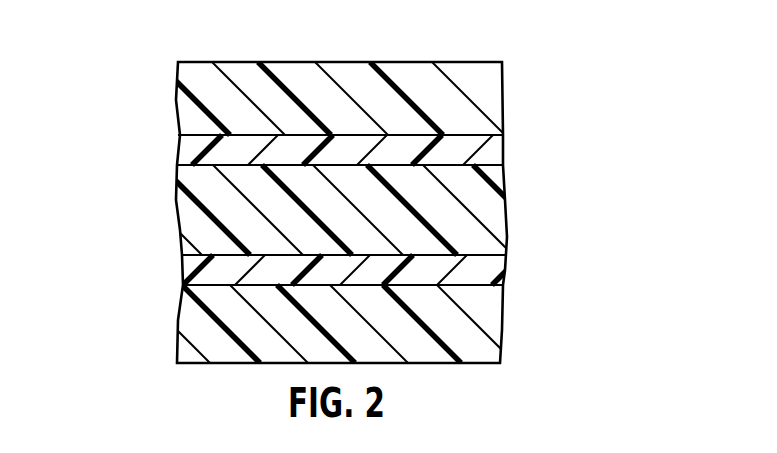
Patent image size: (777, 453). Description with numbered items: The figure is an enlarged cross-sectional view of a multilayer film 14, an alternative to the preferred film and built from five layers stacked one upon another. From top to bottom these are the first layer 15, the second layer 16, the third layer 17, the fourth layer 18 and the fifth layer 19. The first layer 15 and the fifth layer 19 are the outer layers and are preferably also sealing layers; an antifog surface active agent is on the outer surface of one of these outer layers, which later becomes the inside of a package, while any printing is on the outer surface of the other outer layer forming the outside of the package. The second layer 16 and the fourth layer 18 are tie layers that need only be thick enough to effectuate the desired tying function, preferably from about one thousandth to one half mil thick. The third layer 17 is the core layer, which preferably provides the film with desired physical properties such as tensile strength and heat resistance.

The multilayer film 14 is at (142, 135).
The first layer 15 is at (412, 77).
The second layer 16 is at (482, 152).
The third layer 17 is at (485, 213).
The fourth layer 18 is at (485, 272).
The fifth layer 19 is at (203, 324).